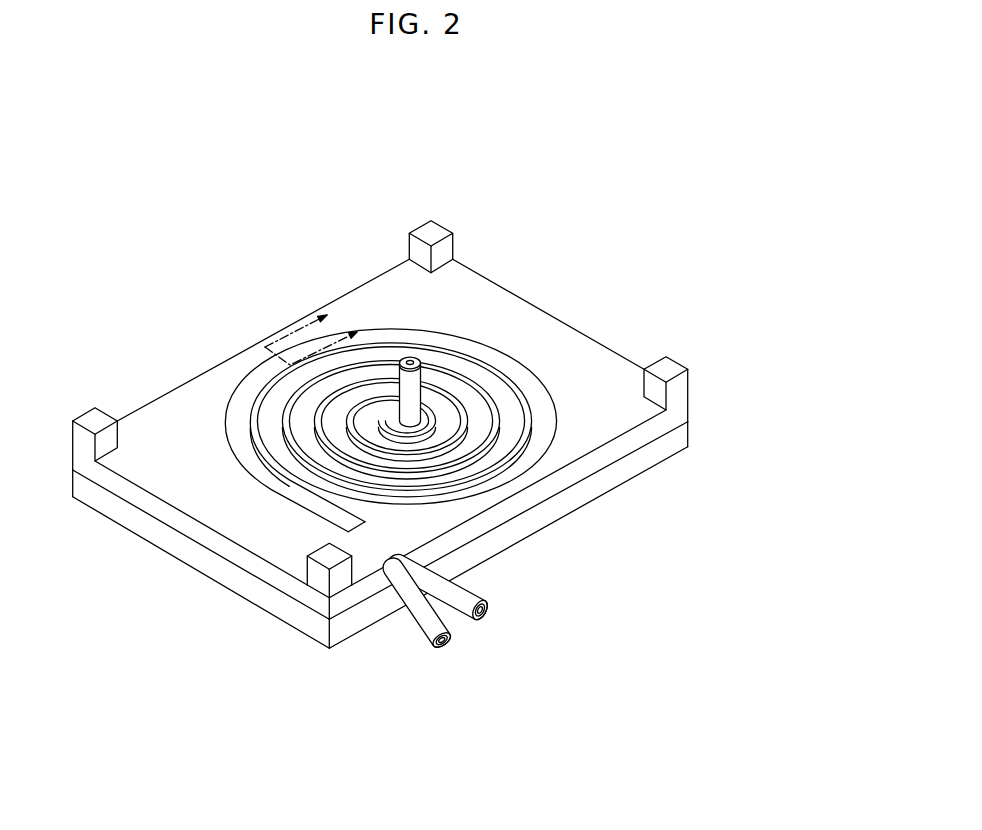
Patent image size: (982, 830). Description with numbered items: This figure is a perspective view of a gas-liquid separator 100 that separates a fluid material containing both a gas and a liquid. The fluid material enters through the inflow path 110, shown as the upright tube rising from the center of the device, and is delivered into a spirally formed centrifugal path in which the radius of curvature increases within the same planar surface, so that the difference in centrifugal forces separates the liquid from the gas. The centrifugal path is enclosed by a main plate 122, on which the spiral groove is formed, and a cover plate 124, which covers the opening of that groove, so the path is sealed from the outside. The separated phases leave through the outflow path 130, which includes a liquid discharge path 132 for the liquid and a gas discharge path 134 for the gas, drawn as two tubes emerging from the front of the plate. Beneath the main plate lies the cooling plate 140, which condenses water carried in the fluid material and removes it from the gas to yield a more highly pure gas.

The gas-liquid separator 100 is at (662, 172).
The inflow path 110 is at (417, 377).
The main plate 122 is at (679, 407).
The cover plate 124 is at (540, 395).
The outflow path 130 is at (412, 757).
The liquid discharge path 132 is at (431, 650).
The gas discharge path 134 is at (471, 622).
The cooling plate 140 is at (679, 443).